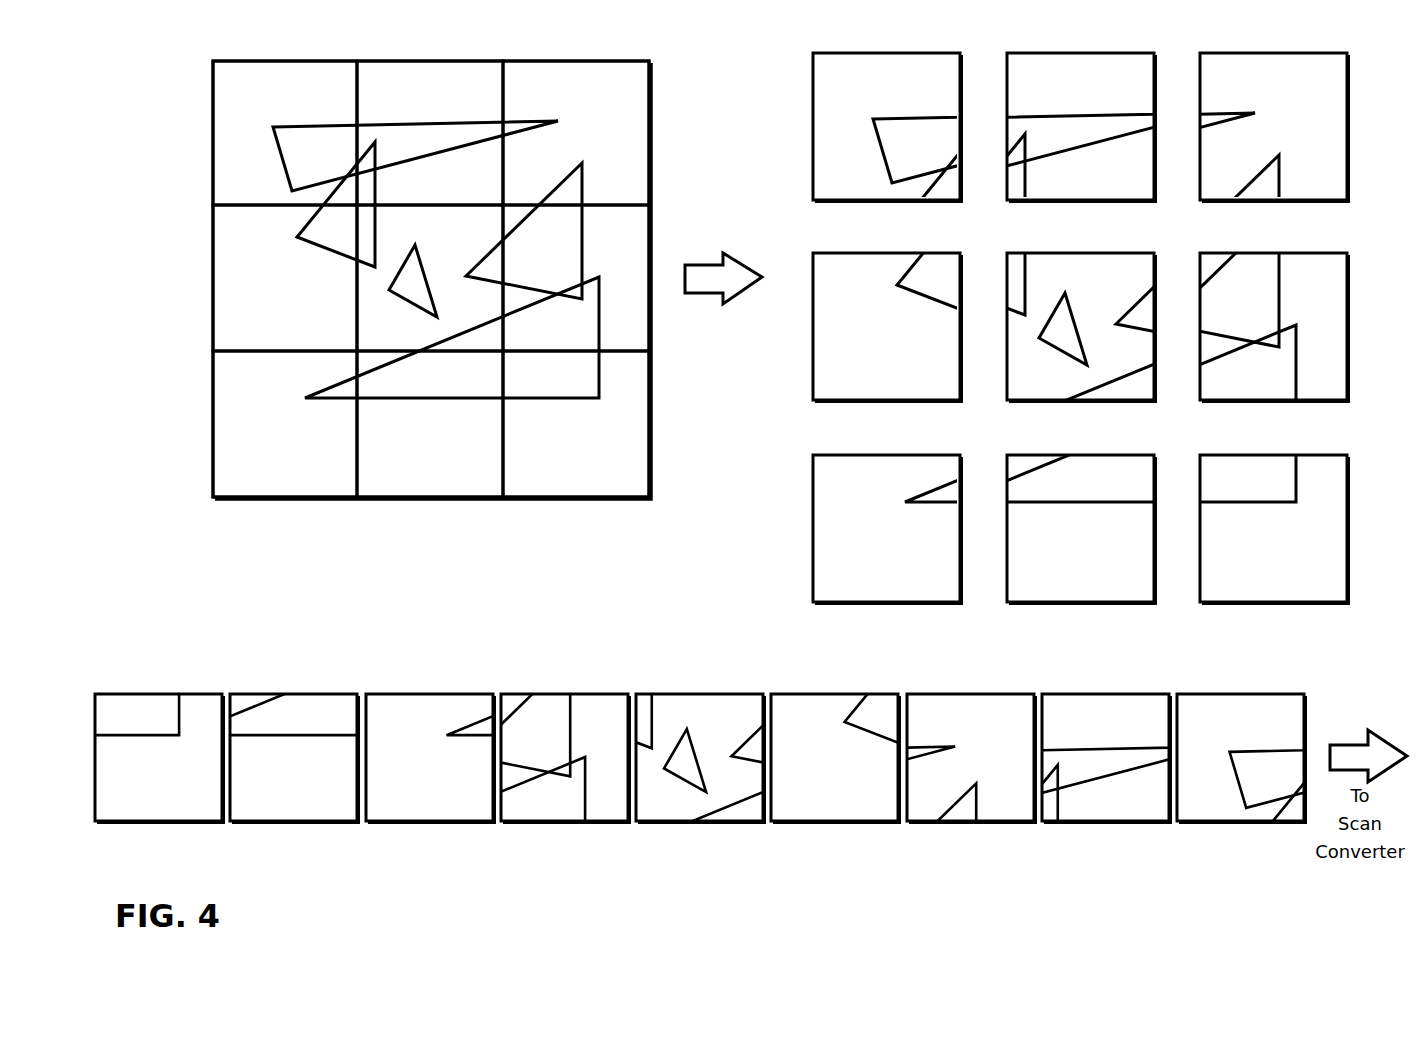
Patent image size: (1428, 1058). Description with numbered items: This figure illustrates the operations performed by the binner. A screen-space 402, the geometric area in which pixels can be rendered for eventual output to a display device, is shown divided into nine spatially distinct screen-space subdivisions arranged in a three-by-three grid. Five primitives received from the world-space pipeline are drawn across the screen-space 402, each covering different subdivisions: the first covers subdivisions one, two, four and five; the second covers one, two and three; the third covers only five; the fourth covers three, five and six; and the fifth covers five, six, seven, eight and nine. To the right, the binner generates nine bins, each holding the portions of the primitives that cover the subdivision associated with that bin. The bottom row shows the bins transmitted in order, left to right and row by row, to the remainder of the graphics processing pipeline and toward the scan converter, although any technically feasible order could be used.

The screen-space 402 is at (672, 60).